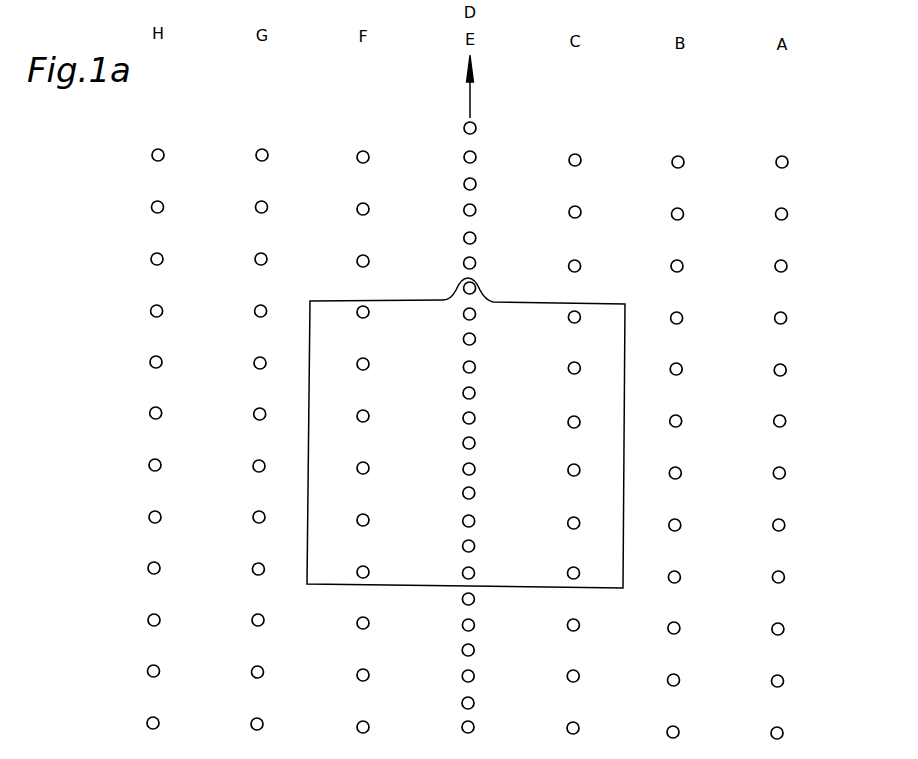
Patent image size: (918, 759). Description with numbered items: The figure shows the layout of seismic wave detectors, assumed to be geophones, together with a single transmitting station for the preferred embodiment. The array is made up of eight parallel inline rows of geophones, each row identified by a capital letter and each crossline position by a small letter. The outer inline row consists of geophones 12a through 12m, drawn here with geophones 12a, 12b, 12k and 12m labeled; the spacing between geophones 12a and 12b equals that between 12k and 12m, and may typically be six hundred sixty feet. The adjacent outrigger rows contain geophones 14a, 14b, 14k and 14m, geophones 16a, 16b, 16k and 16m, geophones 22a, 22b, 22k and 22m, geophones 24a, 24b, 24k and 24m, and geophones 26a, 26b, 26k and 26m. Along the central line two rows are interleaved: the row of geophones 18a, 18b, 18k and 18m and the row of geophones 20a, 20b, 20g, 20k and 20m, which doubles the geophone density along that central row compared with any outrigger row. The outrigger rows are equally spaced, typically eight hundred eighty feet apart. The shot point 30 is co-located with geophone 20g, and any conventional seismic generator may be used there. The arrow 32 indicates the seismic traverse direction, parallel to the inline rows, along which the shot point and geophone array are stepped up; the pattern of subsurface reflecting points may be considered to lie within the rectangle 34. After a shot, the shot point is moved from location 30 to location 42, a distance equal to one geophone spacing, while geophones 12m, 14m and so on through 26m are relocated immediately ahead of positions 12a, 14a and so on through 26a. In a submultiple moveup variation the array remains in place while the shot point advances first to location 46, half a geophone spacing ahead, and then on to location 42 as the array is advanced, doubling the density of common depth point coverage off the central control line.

The geophone 12a is at (152, 152).
The geophone 12b is at (152, 205).
The geophone 12k is at (148, 668).
The geophone 12m is at (148, 720).
The geophone 14a is at (256, 152).
The geophone 14b is at (256, 205).
The geophone 14k is at (252, 669).
The geophone 14m is at (252, 721).
The geophone 16a is at (357, 154).
The geophone 16b is at (357, 207).
The geophone 16k is at (357, 672).
The geophone 16m is at (357, 724).
The geophone 18a is at (464, 154).
The geophone 18b is at (464, 208).
The geophone 18k is at (462, 673).
The geophone 18m is at (462, 724).
The geophone 20a is at (477, 128).
The geophone 20b is at (477, 184).
The geophone 20g is at (474, 447).
The geophone 20k is at (474, 650).
The geophone 20m is at (474, 703).
The geophone 22a is at (570, 157).
The geophone 22b is at (570, 210).
The geophone 22k is at (568, 673).
The geophone 22m is at (568, 725).
The geophone 24a is at (672, 159).
The geophone 24b is at (672, 212).
The geophone 24k is at (668, 677).
The geophone 24m is at (668, 729).
The geophone 26a is at (776, 159).
The geophone 26b is at (776, 212).
The geophone 26k is at (772, 678).
The geophone 26m is at (772, 730).
The shot point 30 is at (470, 458).
The arrow 32 is at (470, 97).
The rectangle 34 is at (587, 304).
The shot point location 42 is at (461, 393).
The shot point location 46 is at (461, 418).